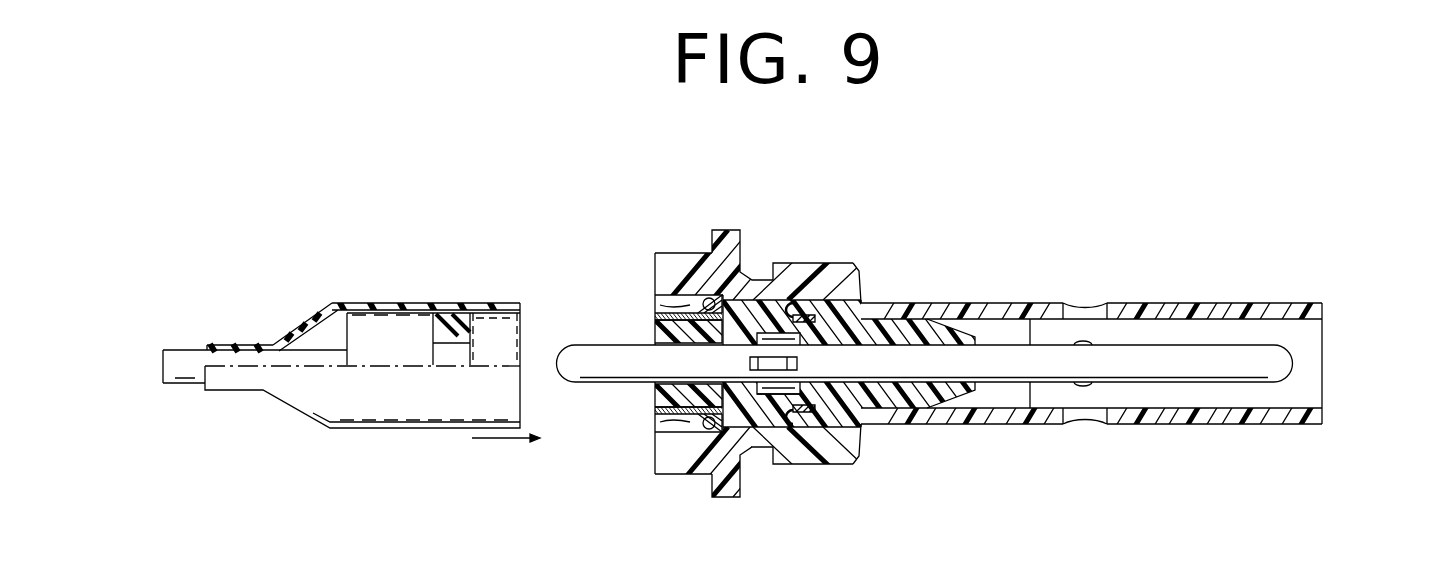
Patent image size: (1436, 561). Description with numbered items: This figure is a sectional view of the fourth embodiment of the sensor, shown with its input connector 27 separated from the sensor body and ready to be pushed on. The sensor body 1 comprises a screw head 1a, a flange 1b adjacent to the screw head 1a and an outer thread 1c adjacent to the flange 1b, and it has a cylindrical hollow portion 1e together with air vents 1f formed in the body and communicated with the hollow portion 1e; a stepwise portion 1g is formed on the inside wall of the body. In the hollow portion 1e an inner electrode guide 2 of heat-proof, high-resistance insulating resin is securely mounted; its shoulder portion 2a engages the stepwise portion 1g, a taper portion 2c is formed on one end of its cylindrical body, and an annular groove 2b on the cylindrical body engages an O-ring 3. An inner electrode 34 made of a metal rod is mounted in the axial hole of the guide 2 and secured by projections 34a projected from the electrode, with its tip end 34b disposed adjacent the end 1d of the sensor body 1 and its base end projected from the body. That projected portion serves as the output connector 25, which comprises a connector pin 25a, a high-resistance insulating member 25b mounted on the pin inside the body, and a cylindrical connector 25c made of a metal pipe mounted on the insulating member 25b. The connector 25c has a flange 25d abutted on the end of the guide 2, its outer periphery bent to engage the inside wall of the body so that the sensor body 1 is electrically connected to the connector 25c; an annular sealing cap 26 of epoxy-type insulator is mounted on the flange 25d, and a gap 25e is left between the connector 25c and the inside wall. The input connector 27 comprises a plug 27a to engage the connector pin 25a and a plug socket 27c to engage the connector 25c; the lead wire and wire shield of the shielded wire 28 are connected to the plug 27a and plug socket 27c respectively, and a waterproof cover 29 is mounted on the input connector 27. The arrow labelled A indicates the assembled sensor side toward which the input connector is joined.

The sensor body 1 is at (883, 302).
The screw head 1a is at (682, 473).
The flange 1b is at (728, 227).
The outer thread 1c is at (843, 263).
The end of the sensor body 1d is at (1323, 355).
The cylindrical hollow portion 1e is at (1143, 327).
The air vents 1f is at (1080, 303).
The stepwise portion 1g is at (830, 273).
The inner electrode guide 2 is at (873, 393).
The shoulder portion 2a is at (787, 316).
The annular groove 2b is at (817, 400).
The taper portion 2c is at (960, 393).
The O-ring 3 is at (807, 390).
The output connector 25 is at (640, 330).
The connector pin 25a is at (598, 370).
The high-resistance insulating member 25b is at (652, 393).
The cylindrical connector 25c is at (667, 303).
The flange 25d is at (745, 262).
The gap 25e is at (673, 277).
The annular sealing cap 26 is at (652, 423).
The input connector 27 is at (390, 330).
The plug 27a is at (450, 300).
The plug socket 27c is at (507, 300).
The shielded wire 28 is at (183, 383).
The waterproof cover 29 is at (415, 437).
The inner electrode 34 is at (1003, 358).
The projections 34a is at (770, 390).
The tip end 34b is at (1277, 373).
The connector assembly direction A is at (1028, 232).